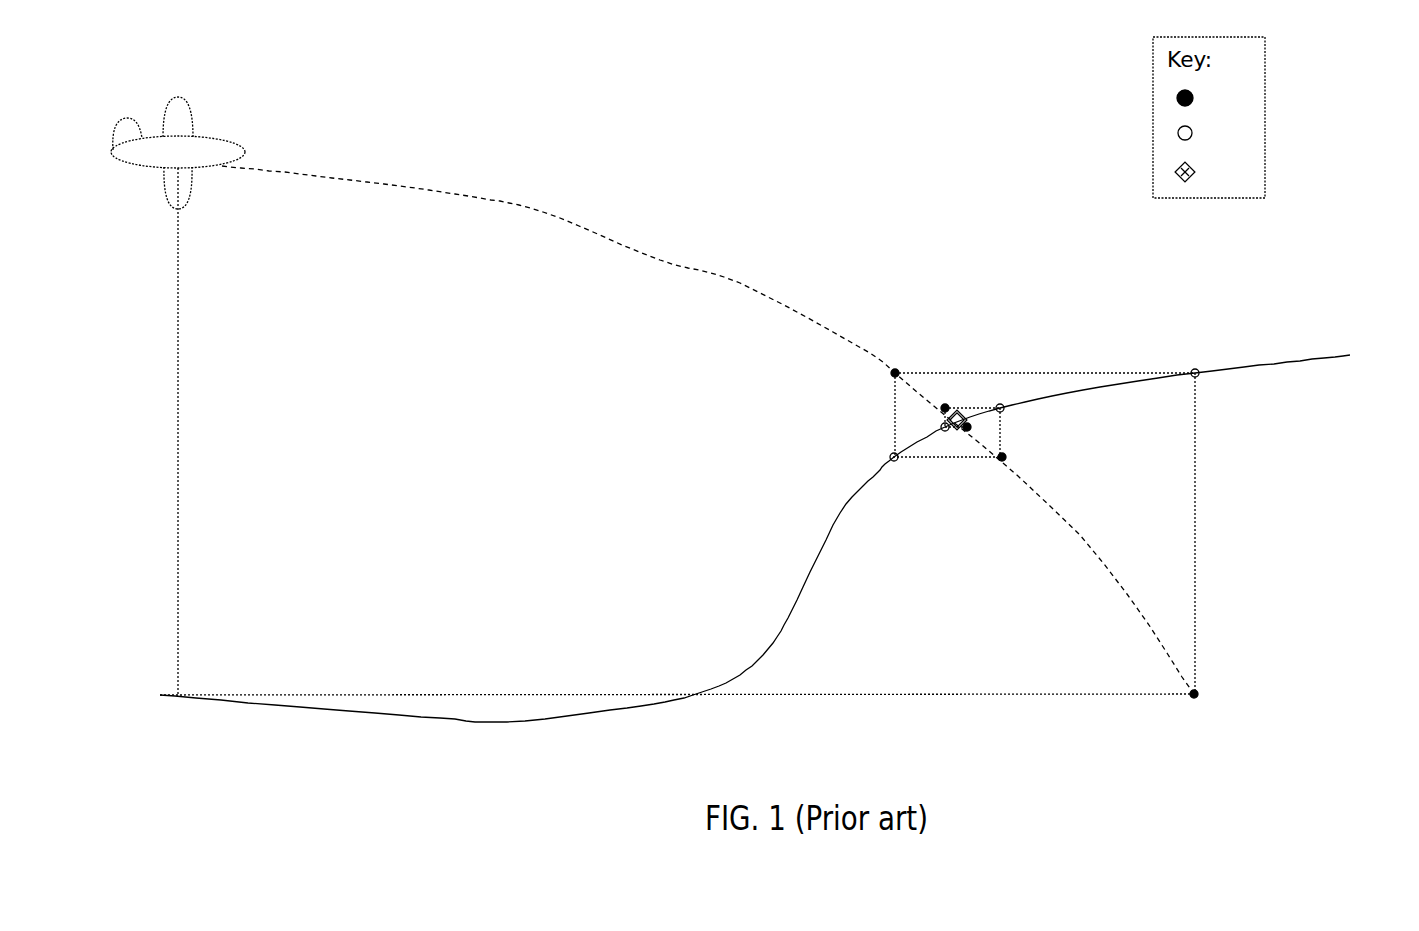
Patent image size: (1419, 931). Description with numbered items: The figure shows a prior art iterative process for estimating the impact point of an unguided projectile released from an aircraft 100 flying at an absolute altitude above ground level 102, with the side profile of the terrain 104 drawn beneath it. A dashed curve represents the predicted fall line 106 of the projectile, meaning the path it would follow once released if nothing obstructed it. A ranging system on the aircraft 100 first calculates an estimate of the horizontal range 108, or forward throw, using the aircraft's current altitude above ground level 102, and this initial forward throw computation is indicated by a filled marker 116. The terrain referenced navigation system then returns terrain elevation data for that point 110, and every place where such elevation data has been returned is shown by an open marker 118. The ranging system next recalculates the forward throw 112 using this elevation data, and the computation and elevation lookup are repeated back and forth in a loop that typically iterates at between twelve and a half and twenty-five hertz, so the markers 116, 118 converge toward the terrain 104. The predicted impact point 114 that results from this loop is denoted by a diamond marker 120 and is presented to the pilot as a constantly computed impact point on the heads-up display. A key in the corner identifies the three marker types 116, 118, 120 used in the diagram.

The aircraft 100 is at (225, 140).
The absolute altitude above ground level 102 is at (178, 420).
The side profile of the terrain 104 is at (1287, 362).
The predicted fall line 106 is at (543, 212).
The horizontal range 108 is at (495, 697).
The point for terrain elevation data 110 is at (1193, 538).
The recalculated forward throw 112 is at (1032, 373).
The predicted impact point 114 is at (958, 418).
The marker 116 is at (1067, 391).
The marker 118 is at (1066, 290).
The marker 120 is at (1096, 293).